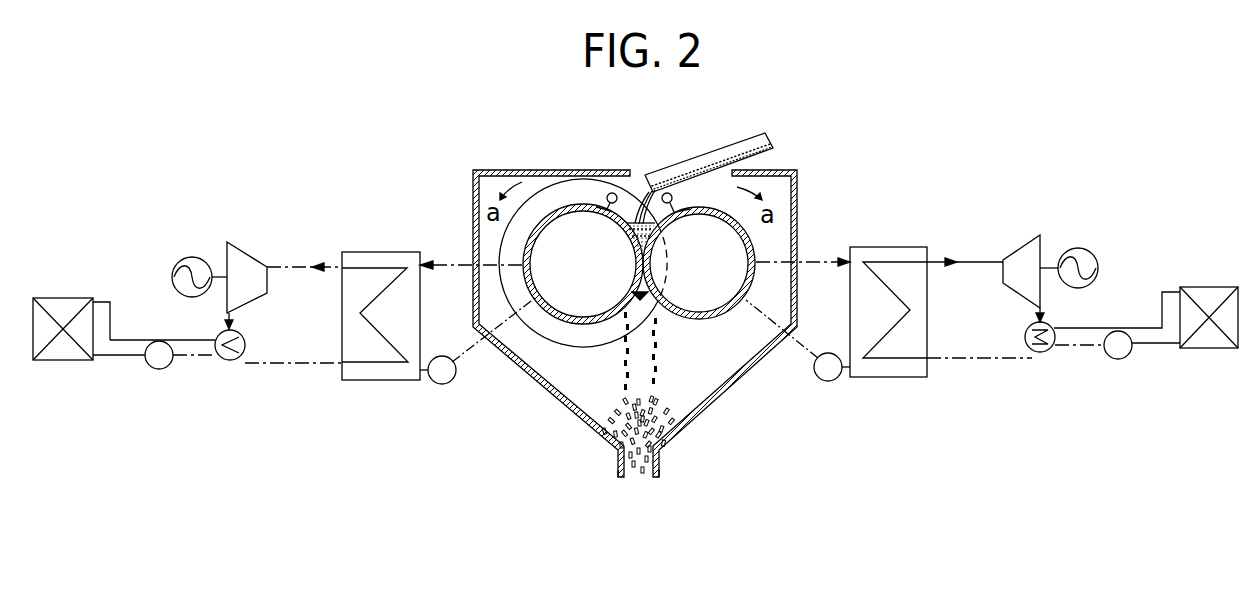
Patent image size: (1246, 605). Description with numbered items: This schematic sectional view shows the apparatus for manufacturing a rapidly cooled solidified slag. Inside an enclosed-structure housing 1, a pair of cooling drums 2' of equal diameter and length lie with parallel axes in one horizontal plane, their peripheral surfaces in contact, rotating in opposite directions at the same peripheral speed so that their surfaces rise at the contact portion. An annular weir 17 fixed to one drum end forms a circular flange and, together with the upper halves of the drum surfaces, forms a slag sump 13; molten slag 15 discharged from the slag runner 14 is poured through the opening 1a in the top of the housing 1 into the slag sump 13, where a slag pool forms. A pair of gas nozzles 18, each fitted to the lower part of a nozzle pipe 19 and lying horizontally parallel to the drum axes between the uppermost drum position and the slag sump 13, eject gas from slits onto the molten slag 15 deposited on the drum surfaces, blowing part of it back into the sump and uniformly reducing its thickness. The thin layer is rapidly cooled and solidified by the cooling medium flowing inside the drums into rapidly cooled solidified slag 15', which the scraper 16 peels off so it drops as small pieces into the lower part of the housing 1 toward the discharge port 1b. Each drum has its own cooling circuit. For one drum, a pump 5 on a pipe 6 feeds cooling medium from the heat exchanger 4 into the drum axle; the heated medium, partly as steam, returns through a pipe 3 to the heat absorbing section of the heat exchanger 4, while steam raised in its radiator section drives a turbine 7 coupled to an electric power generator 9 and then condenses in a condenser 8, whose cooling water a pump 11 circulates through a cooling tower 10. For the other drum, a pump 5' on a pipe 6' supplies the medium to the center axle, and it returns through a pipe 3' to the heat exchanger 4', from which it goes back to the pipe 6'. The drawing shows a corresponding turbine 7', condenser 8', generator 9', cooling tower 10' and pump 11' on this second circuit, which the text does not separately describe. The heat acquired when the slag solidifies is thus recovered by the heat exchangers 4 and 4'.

The housing 1 is at (790, 170).
The opening 1a is at (632, 172).
The discharge port 1b is at (630, 470).
The cooling drums 2' is at (639, 290).
The pipe 3 is at (830, 231).
The pipe 3' is at (437, 236).
The heat exchanger 4 is at (926, 283).
The heat exchanger 4' is at (343, 284).
The pump 5 is at (832, 393).
The pump 5' is at (438, 395).
The pipe 6 is at (782, 353).
The pipe 6' is at (493, 354).
The turbine 7 is at (1030, 256).
The turbine 7' is at (239, 261).
The condenser 8 is at (1053, 349).
The condenser 8' is at (226, 370).
The electric power generator 9 is at (1078, 242).
The generator 9' is at (192, 251).
The cooling tower 10 is at (1185, 288).
The cooling tower / heat sink 10' is at (89, 300).
The pump 11 is at (1096, 371).
The pump 11' is at (180, 382).
The slag sump 13 is at (632, 233).
The slag runner 14 is at (692, 158).
The molten slag 15 is at (651, 172).
The rapidly cooled solidified slag 15' is at (641, 392).
The scraper 16 is at (632, 292).
The weirs 17 is at (548, 185).
The gas nozzles 18 is at (596, 207).
The nozzle pipes 19 is at (607, 198).